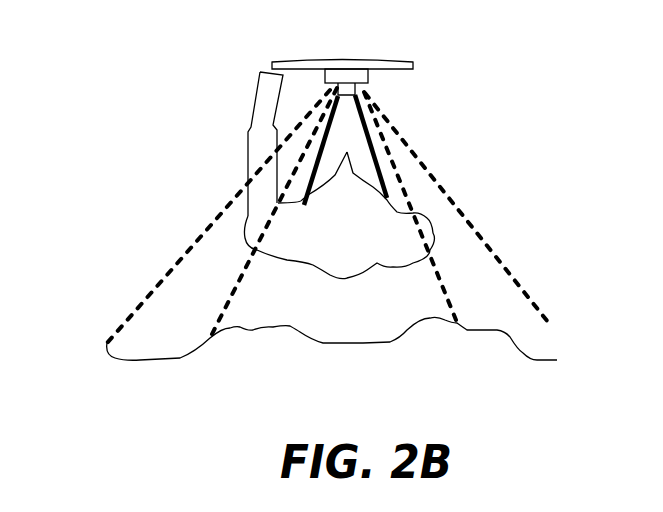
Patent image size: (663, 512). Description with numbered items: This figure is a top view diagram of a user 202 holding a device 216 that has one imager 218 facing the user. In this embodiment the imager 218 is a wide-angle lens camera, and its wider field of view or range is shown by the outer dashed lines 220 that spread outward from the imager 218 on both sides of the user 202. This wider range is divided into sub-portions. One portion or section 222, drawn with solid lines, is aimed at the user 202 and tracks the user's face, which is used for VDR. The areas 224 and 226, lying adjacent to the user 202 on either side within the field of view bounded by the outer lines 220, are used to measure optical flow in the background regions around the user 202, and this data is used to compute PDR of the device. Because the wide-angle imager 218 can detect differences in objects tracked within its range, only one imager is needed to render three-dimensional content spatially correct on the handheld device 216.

The device 216 is at (413, 62).
The imager 218 is at (368, 77).
The outer dashed lines 220 is at (157, 287).
The portion or section 222 is at (362, 148).
The area 224 is at (197, 328).
The area 226 is at (508, 305).
The user 202 is at (377, 260).